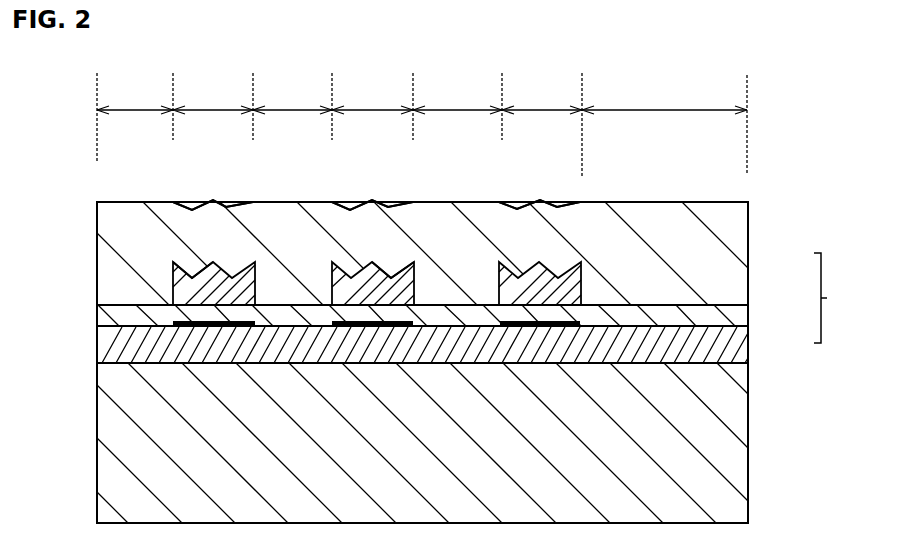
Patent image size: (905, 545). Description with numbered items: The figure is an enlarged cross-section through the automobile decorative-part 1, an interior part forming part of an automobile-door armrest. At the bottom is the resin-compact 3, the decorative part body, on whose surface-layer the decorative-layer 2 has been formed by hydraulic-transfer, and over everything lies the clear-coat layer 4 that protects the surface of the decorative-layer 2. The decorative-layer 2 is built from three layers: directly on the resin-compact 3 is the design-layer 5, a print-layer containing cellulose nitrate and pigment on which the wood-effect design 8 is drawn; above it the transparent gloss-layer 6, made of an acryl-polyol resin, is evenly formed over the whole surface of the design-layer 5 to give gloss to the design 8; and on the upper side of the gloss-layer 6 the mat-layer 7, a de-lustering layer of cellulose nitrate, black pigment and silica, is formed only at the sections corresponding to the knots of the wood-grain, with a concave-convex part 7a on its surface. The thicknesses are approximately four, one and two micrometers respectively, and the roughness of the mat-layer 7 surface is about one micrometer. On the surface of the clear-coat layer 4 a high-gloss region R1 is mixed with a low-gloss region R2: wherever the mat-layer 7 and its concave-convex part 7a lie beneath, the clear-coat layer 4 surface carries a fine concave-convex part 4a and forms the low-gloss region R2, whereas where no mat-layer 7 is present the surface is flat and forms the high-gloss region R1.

The automobile decorative-part 1 is at (85, 180).
The decorative-layer 2 is at (828, 298).
The resin-compact 3 is at (748, 403).
The clear-coat layer 4 is at (748, 212).
The fine concave-convex part 4a is at (225, 207).
The design-layer 5 is at (738, 347).
The gloss-layer 6 is at (733, 316).
The mat-layer 7 is at (581, 262).
The concave-convex part 7a is at (193, 274).
The design 8 is at (222, 327).
The high-gloss region R1 is at (130, 108).
The low-gloss region R2 is at (210, 108).